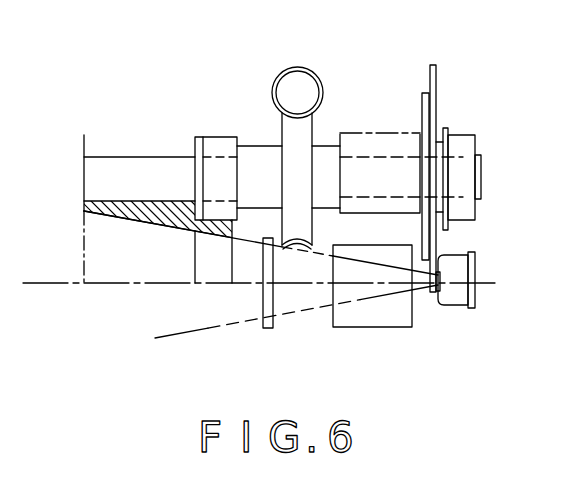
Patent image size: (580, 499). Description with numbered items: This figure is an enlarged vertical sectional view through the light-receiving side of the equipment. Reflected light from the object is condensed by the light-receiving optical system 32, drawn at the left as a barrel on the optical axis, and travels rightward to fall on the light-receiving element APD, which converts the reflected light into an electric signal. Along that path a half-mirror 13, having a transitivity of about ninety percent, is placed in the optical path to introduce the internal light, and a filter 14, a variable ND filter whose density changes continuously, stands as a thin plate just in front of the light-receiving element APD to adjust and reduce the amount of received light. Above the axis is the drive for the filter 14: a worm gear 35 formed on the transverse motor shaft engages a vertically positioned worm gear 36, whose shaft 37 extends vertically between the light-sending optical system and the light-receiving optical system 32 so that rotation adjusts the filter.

The half-mirror 13 is at (373, 321).
The filter 14 is at (437, 67).
The light-receiving optical system 32 is at (65, 284).
The worm gear 35 is at (302, 67).
The worm gear 36 is at (288, 138).
The shaft 37 is at (255, 160).
The light-receiving element APD is at (452, 307).